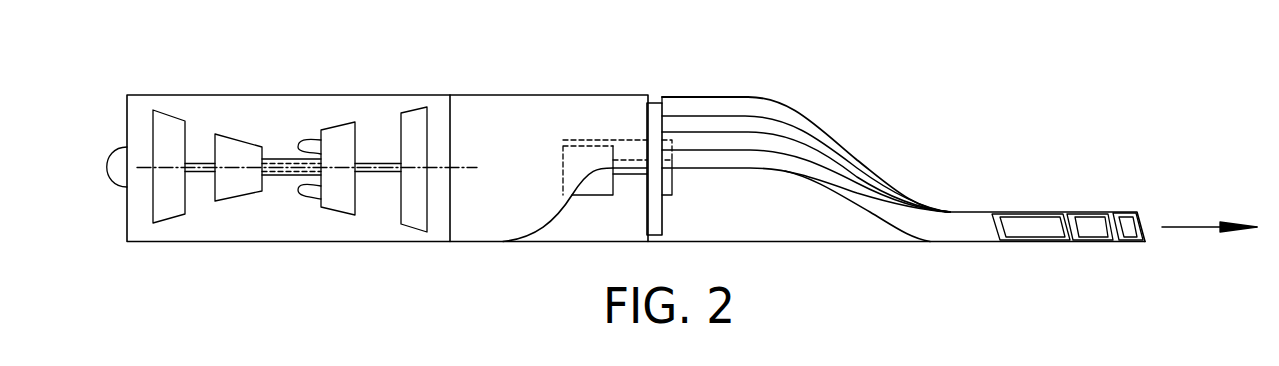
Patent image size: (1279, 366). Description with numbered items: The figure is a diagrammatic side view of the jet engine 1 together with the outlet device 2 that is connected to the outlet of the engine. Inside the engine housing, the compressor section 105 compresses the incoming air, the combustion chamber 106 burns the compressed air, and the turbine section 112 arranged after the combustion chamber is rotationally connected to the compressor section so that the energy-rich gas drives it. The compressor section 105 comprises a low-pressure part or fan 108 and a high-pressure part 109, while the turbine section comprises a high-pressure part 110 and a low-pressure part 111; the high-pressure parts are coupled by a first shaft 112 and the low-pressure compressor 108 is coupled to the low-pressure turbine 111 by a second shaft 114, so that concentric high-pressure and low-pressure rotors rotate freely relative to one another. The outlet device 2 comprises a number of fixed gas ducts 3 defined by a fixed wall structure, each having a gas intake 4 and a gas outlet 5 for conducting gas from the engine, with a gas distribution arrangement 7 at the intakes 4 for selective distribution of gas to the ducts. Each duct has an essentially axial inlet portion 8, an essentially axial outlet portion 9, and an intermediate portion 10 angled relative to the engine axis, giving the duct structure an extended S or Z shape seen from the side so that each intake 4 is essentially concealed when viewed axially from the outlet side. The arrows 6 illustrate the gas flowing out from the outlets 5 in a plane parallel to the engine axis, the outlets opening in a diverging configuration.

The jet engine 1 is at (282, 107).
The outlet device 2 is at (920, 127).
The fixed gas ducts 3 is at (913, 225).
The gas intake 4 is at (663, 127).
The gas outlet 5 is at (1143, 241).
The arrows 6 is at (1190, 227).
The gas distribution arrangement 7 is at (547, 105).
The inlet portion 8 is at (718, 107).
The outlet portion 9 is at (1037, 225).
The intermediate portion 10 is at (827, 145).
The compressor section 105 is at (208, 112).
The combustion chamber 106 is at (300, 192).
The low-pressure compressor 108 is at (168, 210).
The high-pressure compressor 109 is at (242, 190).
The high-pressure turbine 110 is at (338, 203).
The low-pressure turbine 111 is at (415, 218).
The turbine section 112 is at (387, 105).
The second shaft 114 is at (200, 170).